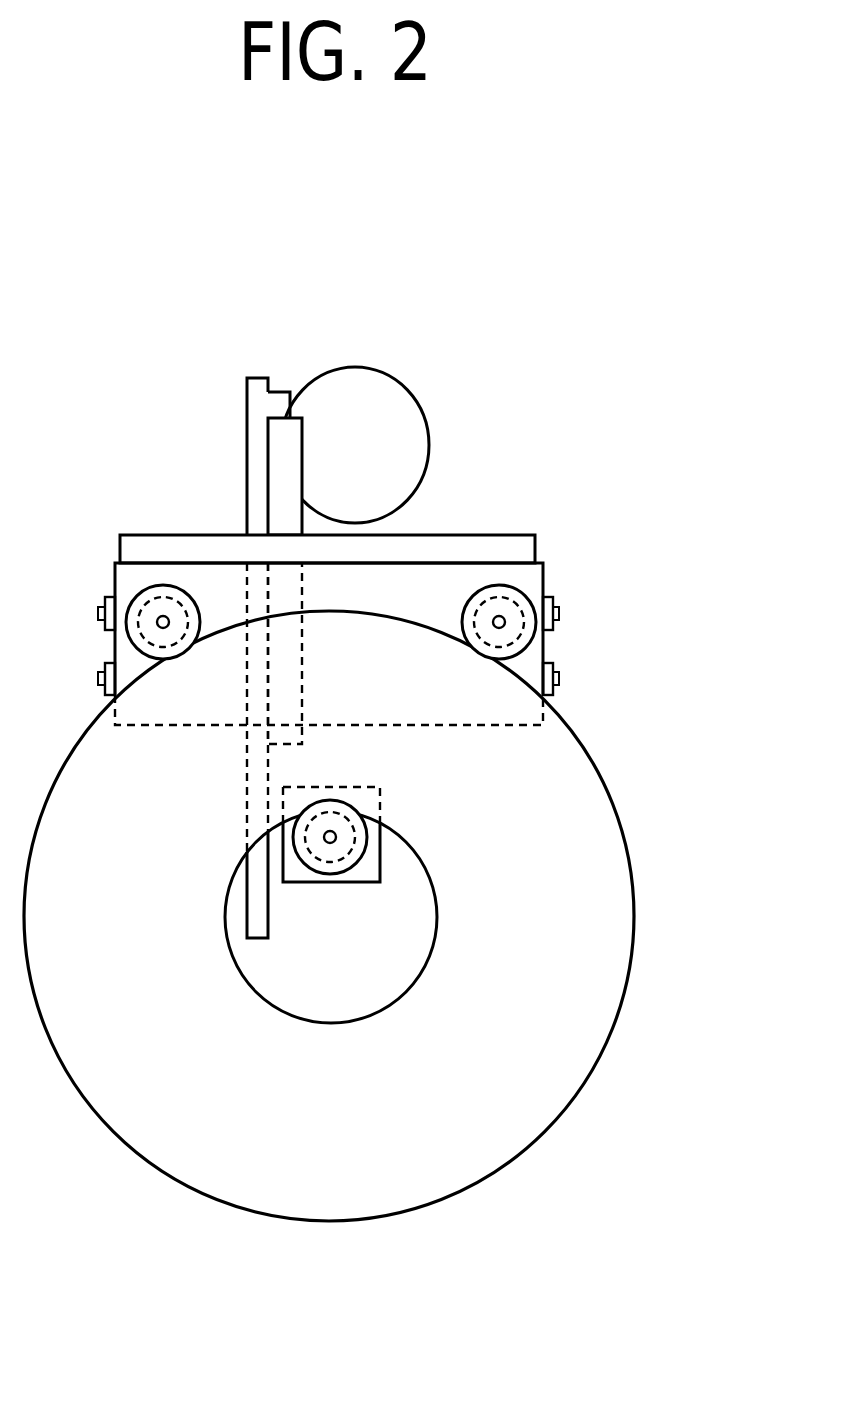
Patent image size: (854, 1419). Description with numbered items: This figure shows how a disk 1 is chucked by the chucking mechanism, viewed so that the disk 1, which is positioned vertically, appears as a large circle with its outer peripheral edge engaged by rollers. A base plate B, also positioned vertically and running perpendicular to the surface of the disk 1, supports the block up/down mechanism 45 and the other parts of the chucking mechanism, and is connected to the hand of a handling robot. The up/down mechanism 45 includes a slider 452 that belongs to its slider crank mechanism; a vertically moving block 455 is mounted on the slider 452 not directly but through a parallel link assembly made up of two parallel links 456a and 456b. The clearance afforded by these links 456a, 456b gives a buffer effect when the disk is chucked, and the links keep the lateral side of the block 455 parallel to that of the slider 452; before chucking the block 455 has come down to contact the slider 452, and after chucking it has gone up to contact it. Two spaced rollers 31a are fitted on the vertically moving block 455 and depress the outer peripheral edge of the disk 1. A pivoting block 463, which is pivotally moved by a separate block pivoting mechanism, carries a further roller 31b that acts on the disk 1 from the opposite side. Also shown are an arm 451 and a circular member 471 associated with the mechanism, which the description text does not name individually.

The disk 1 is at (538, 1100).
The block up/down mechanism 45 is at (402, 545).
The arm 451 is at (292, 432).
The slider 452 is at (502, 543).
The vertically moving block 455 is at (535, 655).
The parallel link 456a is at (549, 694).
The parallel link 456b is at (547, 600).
The roller 31a is at (162, 585).
The roller 31b is at (360, 848).
The pivoting block 463 is at (297, 882).
The cam 471 is at (402, 417).
The base plate B is at (257, 412).